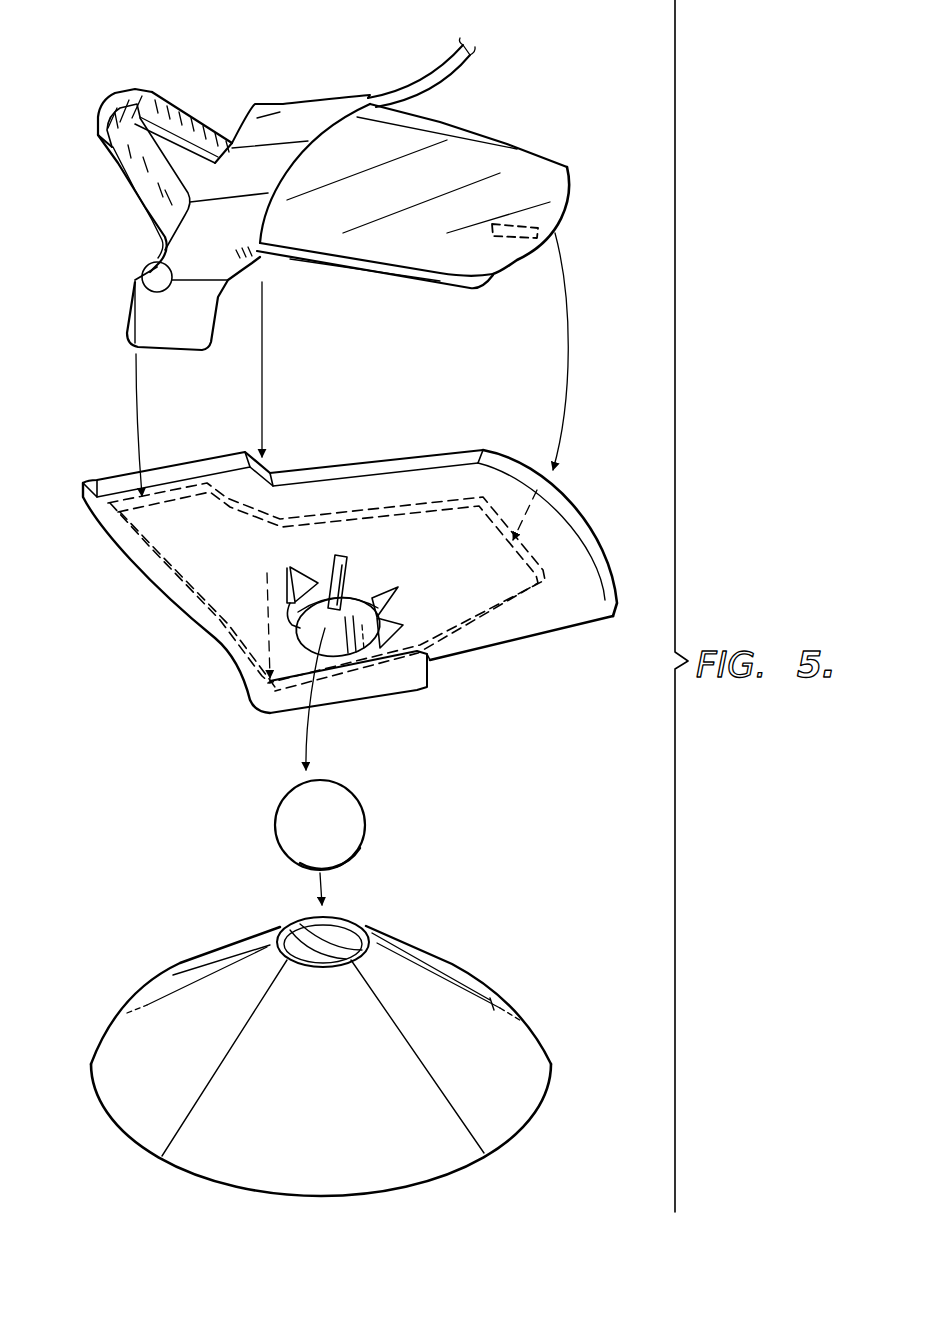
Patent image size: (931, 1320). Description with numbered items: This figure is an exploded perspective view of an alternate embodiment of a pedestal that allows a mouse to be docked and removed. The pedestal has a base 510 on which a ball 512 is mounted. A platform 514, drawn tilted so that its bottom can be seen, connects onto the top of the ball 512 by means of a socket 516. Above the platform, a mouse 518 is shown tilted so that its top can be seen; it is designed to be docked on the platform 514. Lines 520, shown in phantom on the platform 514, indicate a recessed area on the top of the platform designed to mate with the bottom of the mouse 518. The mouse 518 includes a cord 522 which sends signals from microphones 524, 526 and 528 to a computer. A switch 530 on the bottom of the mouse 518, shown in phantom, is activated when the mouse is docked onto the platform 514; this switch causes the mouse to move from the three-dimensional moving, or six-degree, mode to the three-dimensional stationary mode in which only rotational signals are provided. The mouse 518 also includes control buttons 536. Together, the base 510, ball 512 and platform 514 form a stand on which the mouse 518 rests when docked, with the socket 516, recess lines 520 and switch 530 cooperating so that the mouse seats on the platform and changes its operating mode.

The base 510 is at (494, 995).
The ball 512 is at (366, 818).
The platform 514 is at (598, 592).
The socket 516 is at (343, 606).
The mouse 518 is at (570, 168).
The lines 520 is at (375, 501).
The cord 522 is at (448, 58).
The microphone 524 is at (266, 100).
The microphone 526 is at (134, 89).
The microphone 528 is at (130, 280).
The switch 530 is at (548, 225).
The control buttons 536 is at (264, 187).